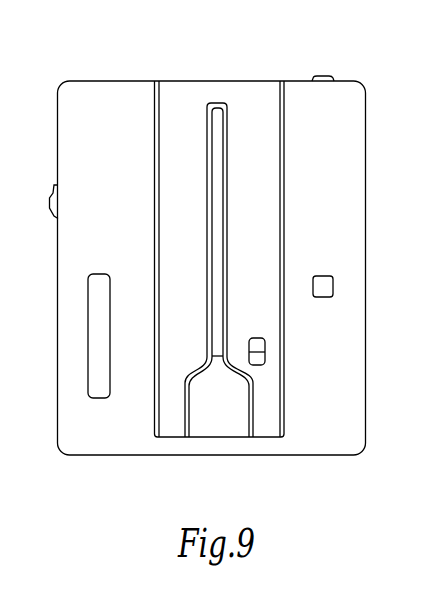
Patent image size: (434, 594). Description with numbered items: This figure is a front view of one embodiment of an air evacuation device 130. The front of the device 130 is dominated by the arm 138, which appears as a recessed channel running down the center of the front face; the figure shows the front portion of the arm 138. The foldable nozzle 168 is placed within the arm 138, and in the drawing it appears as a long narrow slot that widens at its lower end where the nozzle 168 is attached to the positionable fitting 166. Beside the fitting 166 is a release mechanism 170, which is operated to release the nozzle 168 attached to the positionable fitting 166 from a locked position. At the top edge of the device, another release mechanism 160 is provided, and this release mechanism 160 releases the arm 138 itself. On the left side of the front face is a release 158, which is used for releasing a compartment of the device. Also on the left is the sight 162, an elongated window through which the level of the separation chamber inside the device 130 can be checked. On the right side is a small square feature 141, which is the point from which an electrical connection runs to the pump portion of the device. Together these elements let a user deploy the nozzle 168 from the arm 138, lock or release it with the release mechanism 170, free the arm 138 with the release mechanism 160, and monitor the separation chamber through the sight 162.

The air evacuation device 130 is at (333, 42).
The arm 138 is at (221, 87).
The electrical connection source 141 is at (331, 280).
The release 158 is at (53, 191).
The release mechanism 160 is at (321, 76).
The sight 162 is at (88, 303).
The positionable fitting 166 is at (240, 403).
The foldable nozzle 168 is at (217, 197).
The release mechanism 170 is at (262, 343).